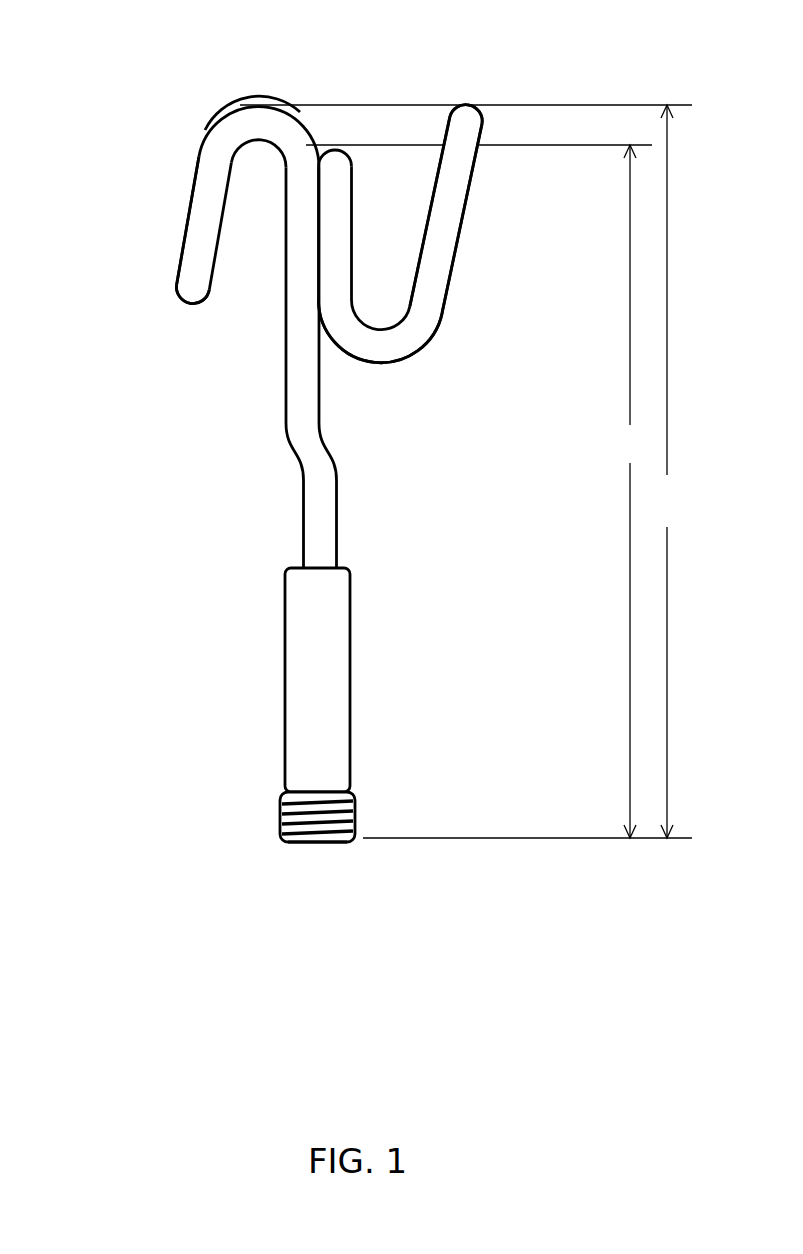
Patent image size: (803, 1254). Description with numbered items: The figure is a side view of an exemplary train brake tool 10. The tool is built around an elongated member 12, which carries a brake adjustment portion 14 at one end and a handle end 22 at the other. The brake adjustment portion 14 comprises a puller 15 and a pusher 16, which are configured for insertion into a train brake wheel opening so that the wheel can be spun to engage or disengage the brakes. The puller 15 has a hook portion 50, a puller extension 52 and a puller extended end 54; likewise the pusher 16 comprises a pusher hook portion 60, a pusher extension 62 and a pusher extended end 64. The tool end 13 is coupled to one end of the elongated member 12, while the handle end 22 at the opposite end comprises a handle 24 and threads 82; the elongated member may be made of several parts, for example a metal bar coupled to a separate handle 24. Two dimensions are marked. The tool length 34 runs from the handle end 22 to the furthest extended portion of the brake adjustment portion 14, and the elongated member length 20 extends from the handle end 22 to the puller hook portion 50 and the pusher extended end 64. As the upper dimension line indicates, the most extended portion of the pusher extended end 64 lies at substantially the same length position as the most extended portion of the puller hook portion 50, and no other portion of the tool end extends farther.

The train brake tool 10 is at (160, 92).
The elongated member 12 is at (310, 485).
The tool end 13 is at (385, 368).
The brake adjustment portion 14 is at (297, 130).
The puller 15 is at (203, 180).
The pusher 16 is at (452, 280).
The elongated member length 20 is at (479, 491).
The handle end 22 is at (340, 892).
The handle 24 is at (320, 717).
The tool length 34 is at (466, 471).
The hook portion 50 is at (255, 107).
The puller extension 52 is at (185, 222).
The puller extended end 54 is at (182, 302).
The pusher hook portion 60 is at (393, 343).
The pusher extension 62 is at (447, 208).
The pusher extended end 64 is at (465, 103).
The threads 82 is at (278, 808).